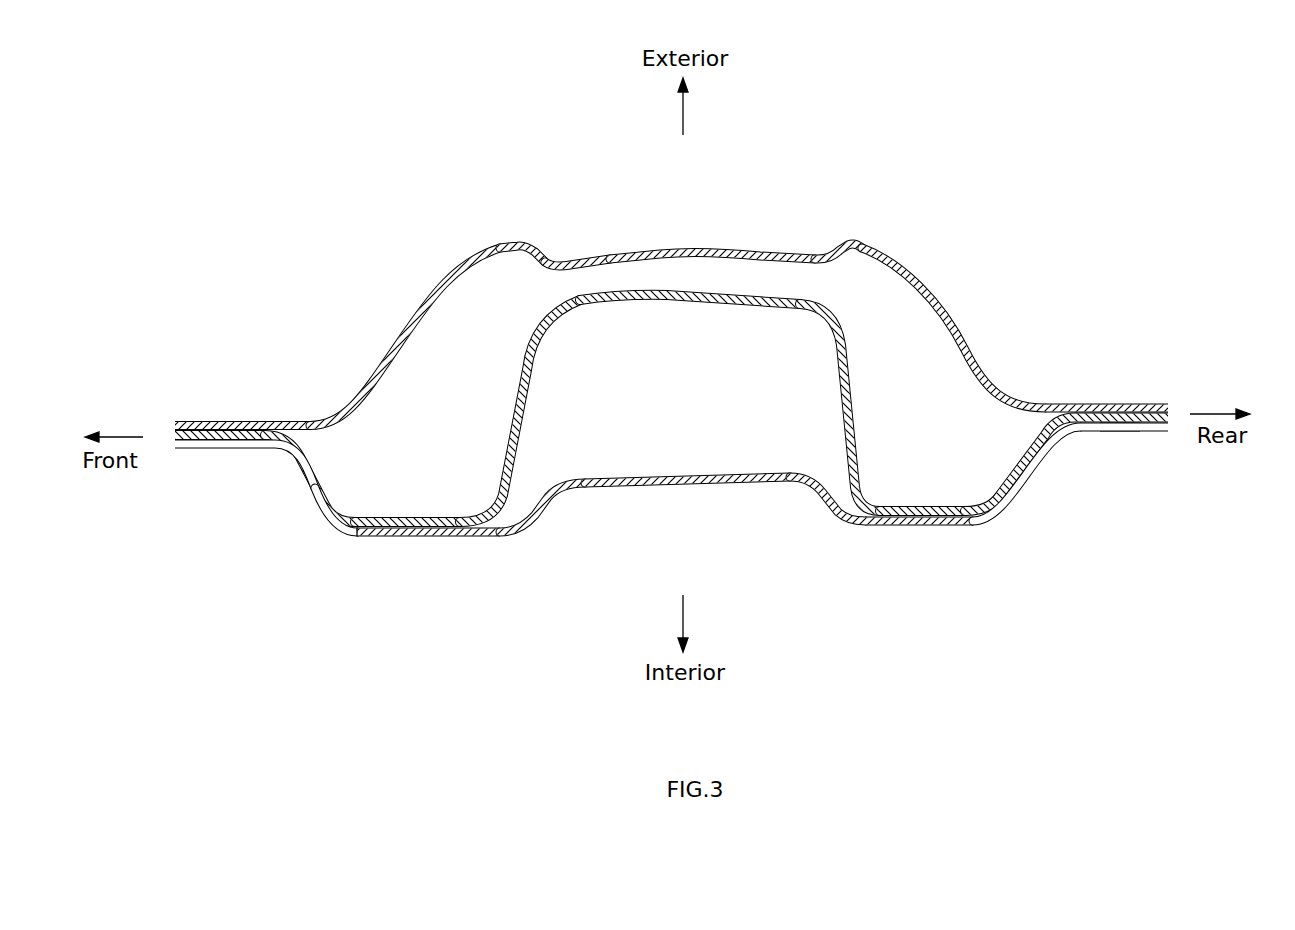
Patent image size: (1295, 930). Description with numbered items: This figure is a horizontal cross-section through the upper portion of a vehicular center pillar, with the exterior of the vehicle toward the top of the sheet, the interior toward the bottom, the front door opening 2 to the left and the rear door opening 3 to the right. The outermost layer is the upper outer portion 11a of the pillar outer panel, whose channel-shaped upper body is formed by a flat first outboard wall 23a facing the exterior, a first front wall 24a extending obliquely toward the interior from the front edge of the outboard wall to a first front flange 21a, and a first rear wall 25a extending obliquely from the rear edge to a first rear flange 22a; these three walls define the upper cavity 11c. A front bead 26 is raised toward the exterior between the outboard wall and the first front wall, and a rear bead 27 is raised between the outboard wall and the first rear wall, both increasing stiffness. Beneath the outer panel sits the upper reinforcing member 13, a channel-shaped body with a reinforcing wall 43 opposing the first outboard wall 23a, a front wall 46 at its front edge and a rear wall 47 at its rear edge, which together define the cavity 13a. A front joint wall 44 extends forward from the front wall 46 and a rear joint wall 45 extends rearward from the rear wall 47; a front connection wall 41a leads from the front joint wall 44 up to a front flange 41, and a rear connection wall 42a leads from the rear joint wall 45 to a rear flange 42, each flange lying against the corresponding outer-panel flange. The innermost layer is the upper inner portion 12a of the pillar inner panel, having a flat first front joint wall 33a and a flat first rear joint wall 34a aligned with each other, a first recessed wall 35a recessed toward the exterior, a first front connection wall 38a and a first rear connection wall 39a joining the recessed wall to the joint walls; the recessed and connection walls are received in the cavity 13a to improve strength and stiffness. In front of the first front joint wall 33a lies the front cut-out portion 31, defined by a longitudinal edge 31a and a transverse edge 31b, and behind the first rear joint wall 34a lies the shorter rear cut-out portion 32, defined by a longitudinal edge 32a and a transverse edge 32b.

The front door opening 2 is at (95, 381).
The rear door opening 3 is at (1239, 373).
The upper outer portion 11a is at (719, 206).
The upper cavity 11c is at (598, 276).
The upper inner portion 12a is at (618, 530).
The upper reinforcing member 13 is at (858, 317).
The cavity 13a is at (666, 397).
The first front flange 21a is at (225, 426).
The first rear flange 22a is at (1135, 408).
The first outboard wall 23a is at (757, 253).
The first front wall 24a is at (415, 325).
The first rear wall 25a is at (955, 325).
The front bead 26 is at (520, 243).
The rear bead 27 is at (852, 243).
The front cut-out portion 31 is at (298, 476).
The longitudinal edge 31a is at (352, 537).
The transverse edge 31b is at (305, 500).
The rear cut-out portion 32 is at (1089, 430).
The longitudinal edge 32a is at (985, 522).
The transverse edge 32b is at (1120, 433).
The first front joint wall 33a is at (418, 538).
The first rear joint wall 34a is at (922, 527).
The first recessed wall 35a is at (678, 490).
The first front connection wall 38a is at (533, 520).
The first rear connection wall 39a is at (825, 507).
The front flange 41 is at (185, 445).
The front connection wall 41a is at (322, 480).
The rear flange 42 is at (1150, 422).
The rear connection wall 42a is at (1022, 458).
The reinforcing wall 43 is at (662, 292).
The front joint wall 44 is at (432, 517).
The rear joint wall 45 is at (925, 507).
The front wall 46 is at (518, 403).
The rear wall 47 is at (853, 403).